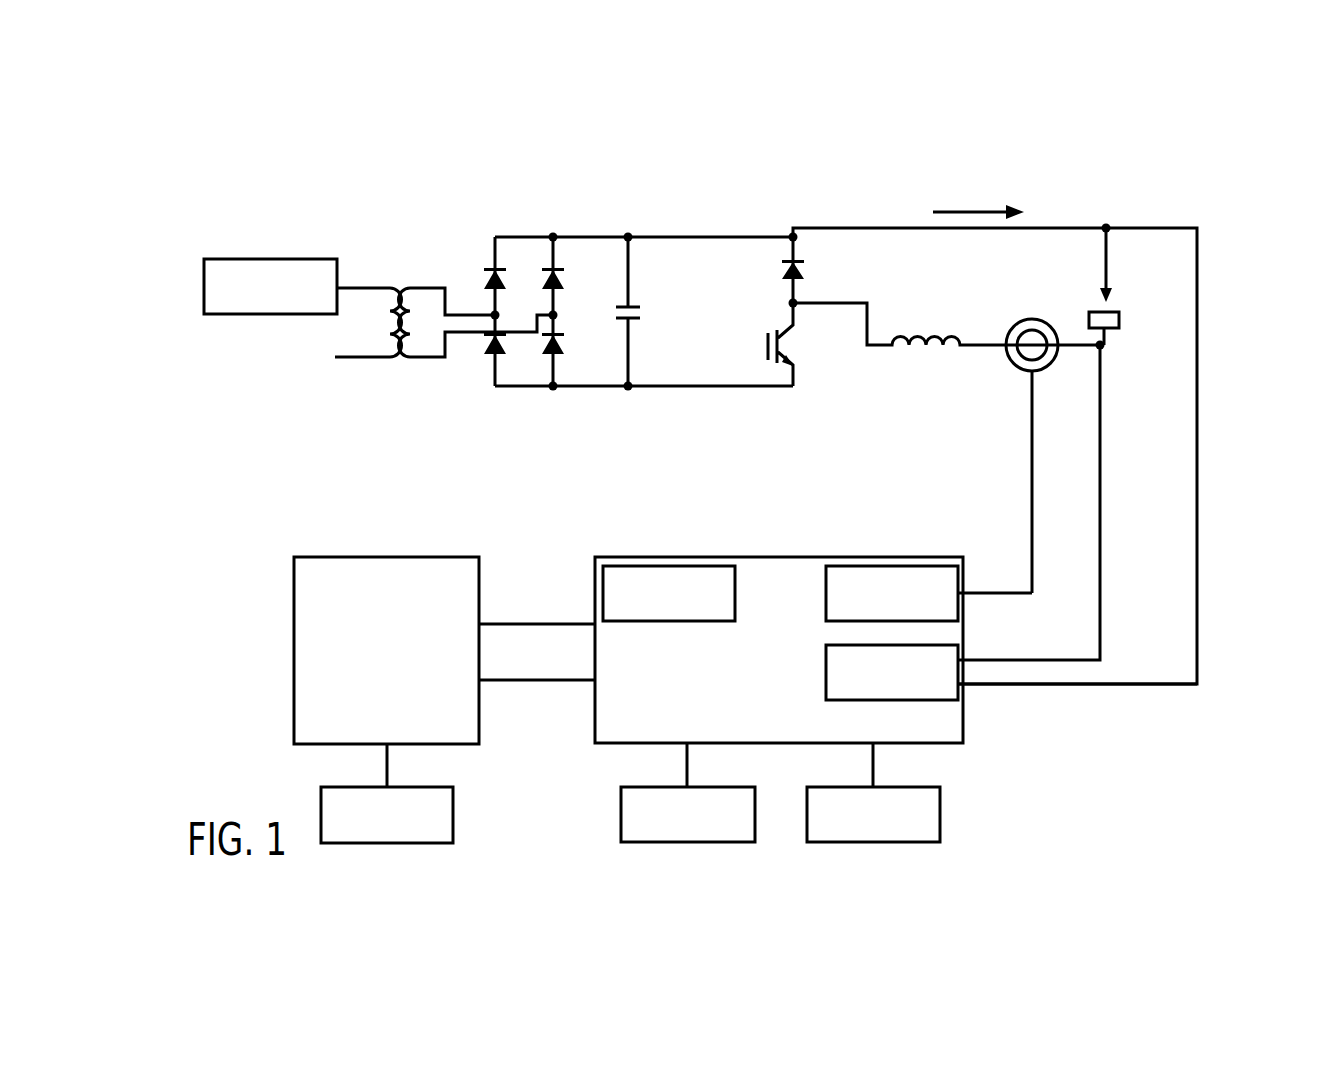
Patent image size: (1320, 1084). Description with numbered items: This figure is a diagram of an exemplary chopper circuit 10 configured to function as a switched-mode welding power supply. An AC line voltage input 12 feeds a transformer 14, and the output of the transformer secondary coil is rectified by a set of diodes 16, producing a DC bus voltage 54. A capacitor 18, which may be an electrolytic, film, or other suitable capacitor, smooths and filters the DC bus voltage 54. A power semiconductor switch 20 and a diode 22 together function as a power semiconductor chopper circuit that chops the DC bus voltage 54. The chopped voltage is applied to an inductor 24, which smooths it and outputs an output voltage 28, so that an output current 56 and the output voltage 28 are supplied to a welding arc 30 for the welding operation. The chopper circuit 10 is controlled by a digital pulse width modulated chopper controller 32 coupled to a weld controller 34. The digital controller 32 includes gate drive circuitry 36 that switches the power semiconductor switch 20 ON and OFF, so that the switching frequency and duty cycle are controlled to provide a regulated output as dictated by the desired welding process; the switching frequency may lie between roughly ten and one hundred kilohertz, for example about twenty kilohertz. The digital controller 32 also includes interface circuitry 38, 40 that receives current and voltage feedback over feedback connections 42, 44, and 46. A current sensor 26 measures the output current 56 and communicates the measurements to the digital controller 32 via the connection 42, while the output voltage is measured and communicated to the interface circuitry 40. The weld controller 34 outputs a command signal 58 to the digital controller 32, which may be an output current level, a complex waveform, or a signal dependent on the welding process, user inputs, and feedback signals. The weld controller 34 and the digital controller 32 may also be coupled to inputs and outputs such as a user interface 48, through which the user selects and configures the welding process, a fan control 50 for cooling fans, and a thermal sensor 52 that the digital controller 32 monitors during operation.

The chopper circuit 10 is at (1238, 176).
The AC line voltage input 12 is at (272, 258).
The transformer 14 is at (408, 276).
The set of diodes 16 is at (487, 275).
The capacitor 18 is at (636, 308).
The power semiconductor switch 20 is at (785, 345).
The diode 22 is at (802, 268).
The inductor 24 is at (912, 338).
The current sensor 26 is at (1012, 326).
The output voltage 28 is at (1022, 270).
The welding arc 30 is at (1130, 302).
The digital pulse width modulated (PWM) chopper controller 32 is at (778, 556).
The weld controller 34 is at (388, 556).
The gate drive circuitry 36 is at (668, 565).
The interface circuitry 38 is at (890, 565).
The interface circuitry 40 is at (890, 702).
The feedback connection 42 is at (1030, 484).
The feedback connection 44 is at (1028, 659).
The feedback connection 46 is at (1078, 686).
The user interface 48 is at (455, 818).
The fan control 50 is at (620, 818).
The thermal sensor 52 is at (941, 818).
The DC bus voltage 54 is at (635, 207).
The output current 56 is at (972, 185).
The command signal 58 is at (538, 623).